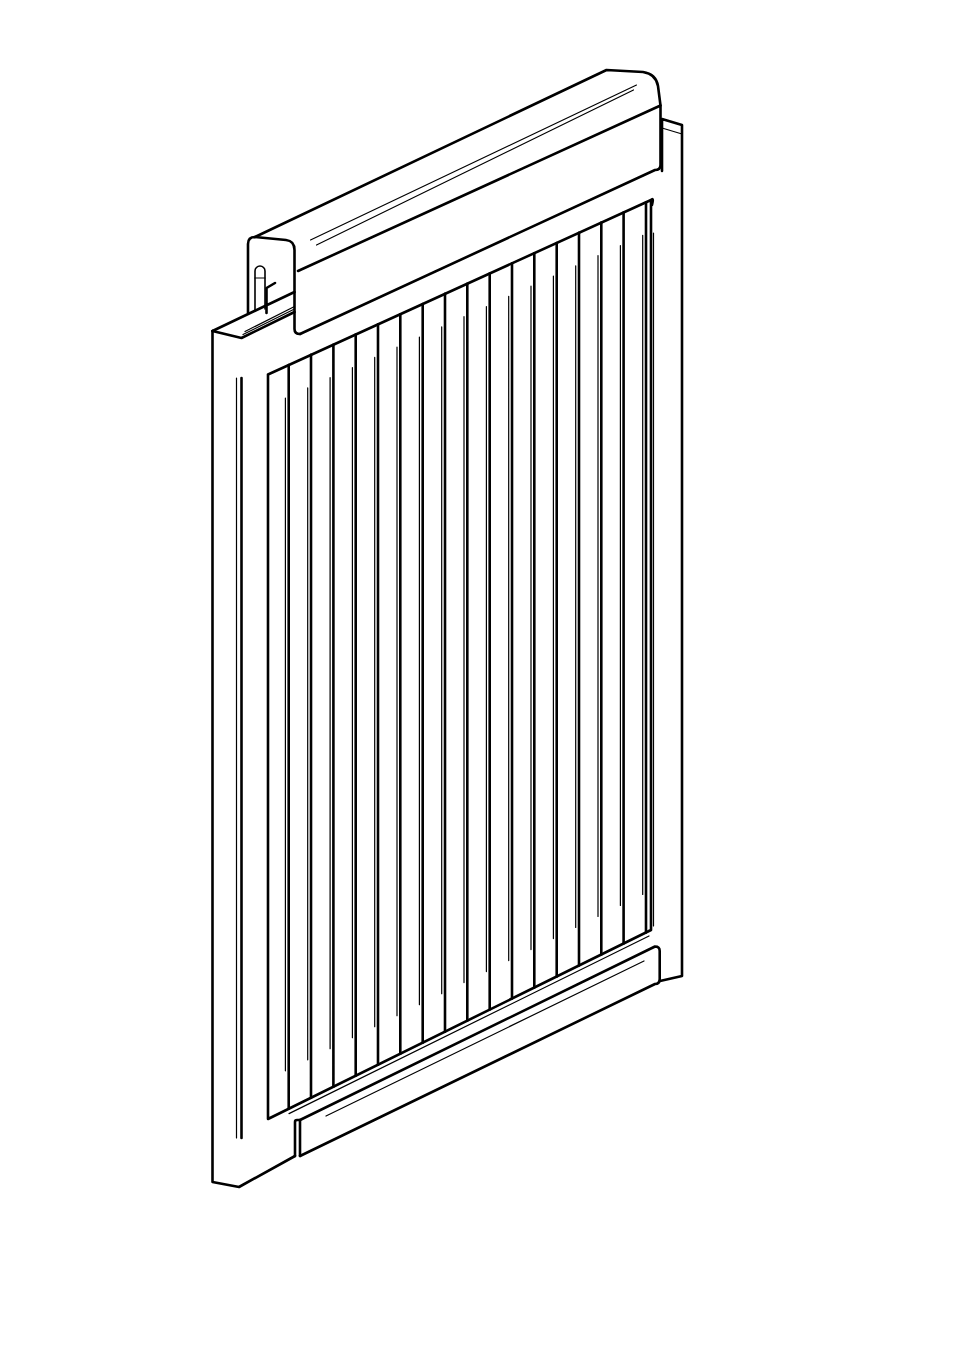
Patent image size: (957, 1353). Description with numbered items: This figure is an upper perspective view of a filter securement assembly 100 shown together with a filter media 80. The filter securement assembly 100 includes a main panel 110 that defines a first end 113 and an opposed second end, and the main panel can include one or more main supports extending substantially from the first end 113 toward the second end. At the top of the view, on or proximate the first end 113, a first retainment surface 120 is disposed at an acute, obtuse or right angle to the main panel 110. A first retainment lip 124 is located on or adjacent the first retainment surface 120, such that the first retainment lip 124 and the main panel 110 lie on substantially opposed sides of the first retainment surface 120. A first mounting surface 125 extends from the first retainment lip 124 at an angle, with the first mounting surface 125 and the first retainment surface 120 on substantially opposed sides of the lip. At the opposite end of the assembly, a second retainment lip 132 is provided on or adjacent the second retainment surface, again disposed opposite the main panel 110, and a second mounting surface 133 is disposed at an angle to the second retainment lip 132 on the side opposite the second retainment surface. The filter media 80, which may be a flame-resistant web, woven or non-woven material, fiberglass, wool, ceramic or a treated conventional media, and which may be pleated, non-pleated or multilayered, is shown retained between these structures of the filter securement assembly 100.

The filter securement assembly 100 is at (148, 128).
The filter media 80 is at (664, 520).
The main panel 110 is at (241, 287).
The first end 113 is at (228, 245).
The first retainment surface 120 is at (576, 85).
The first retainment lip 124 is at (652, 91).
The first mounting surface 125 is at (634, 142).
The second retainment lip 132 is at (288, 1135).
The second mounting surface 133 is at (394, 1085).